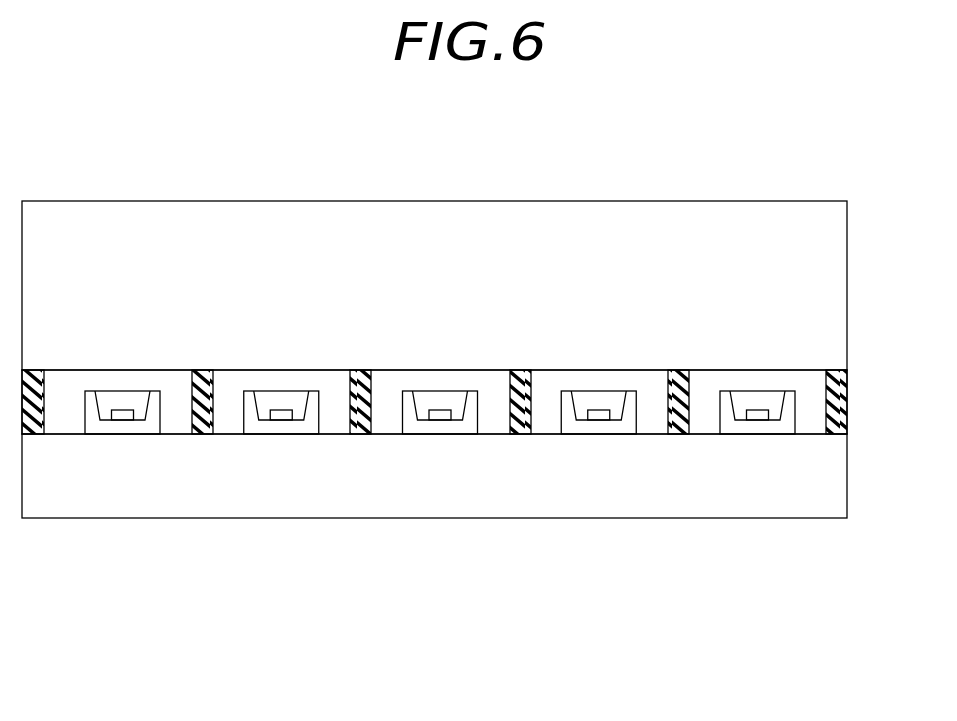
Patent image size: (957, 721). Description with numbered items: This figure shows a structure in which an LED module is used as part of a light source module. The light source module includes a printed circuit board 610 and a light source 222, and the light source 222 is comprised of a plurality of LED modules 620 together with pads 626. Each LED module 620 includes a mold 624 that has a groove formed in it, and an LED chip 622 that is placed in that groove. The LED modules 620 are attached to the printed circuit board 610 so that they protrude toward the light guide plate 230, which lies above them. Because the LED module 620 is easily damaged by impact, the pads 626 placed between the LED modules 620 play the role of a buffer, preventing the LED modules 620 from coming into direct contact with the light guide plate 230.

The light guide plate 230 is at (847, 250).
The light source 222 is at (847, 398).
The printed circuit board 610 is at (847, 476).
The LED module 620 is at (753, 519).
The LED chip 622 is at (763, 420).
The mold 624 is at (739, 428).
The pad 626 is at (678, 434).